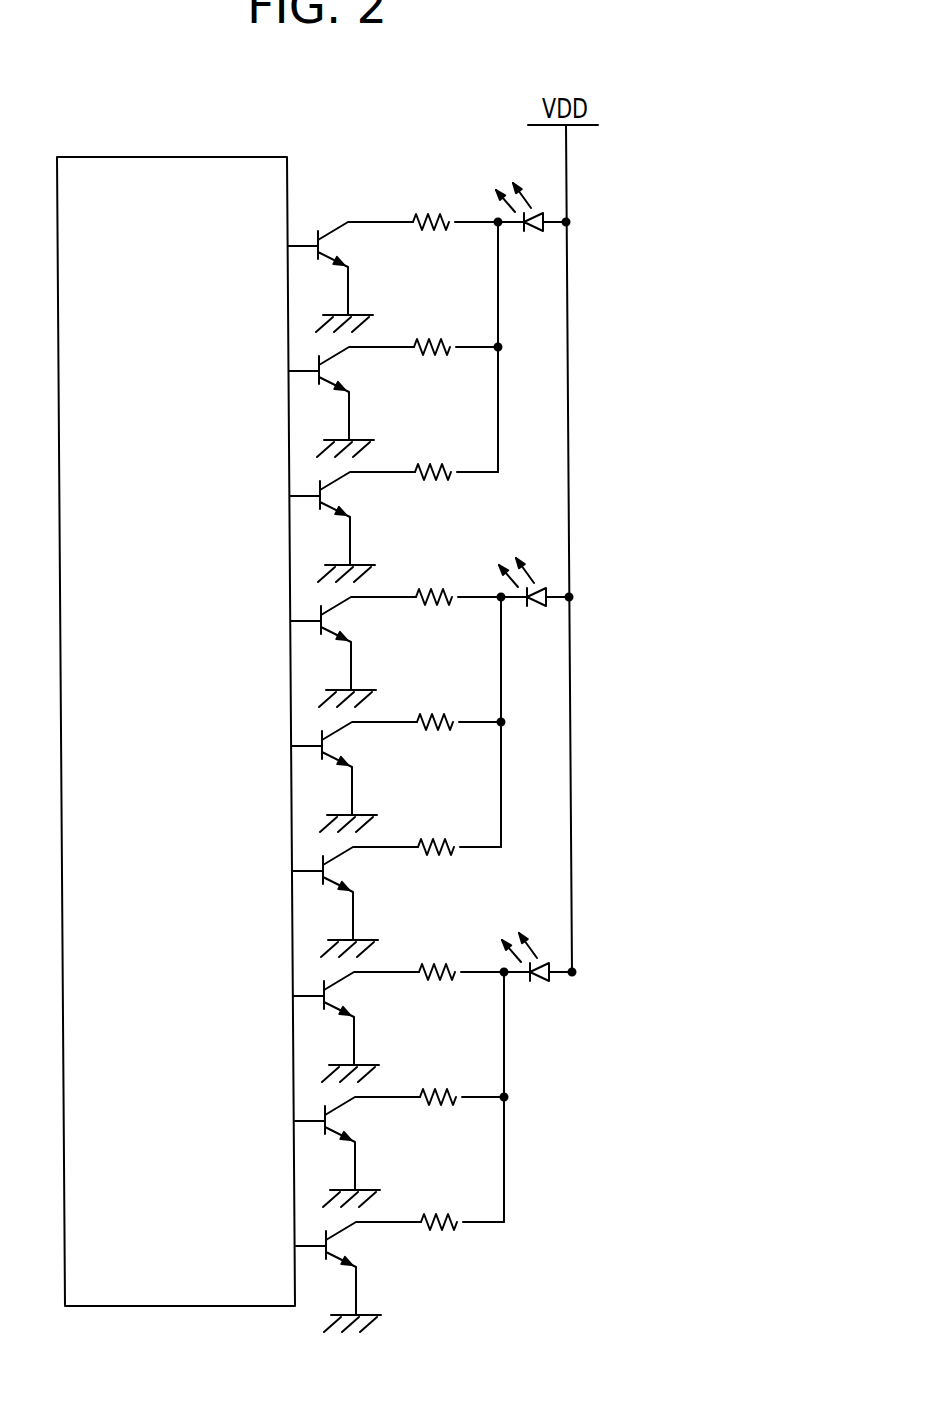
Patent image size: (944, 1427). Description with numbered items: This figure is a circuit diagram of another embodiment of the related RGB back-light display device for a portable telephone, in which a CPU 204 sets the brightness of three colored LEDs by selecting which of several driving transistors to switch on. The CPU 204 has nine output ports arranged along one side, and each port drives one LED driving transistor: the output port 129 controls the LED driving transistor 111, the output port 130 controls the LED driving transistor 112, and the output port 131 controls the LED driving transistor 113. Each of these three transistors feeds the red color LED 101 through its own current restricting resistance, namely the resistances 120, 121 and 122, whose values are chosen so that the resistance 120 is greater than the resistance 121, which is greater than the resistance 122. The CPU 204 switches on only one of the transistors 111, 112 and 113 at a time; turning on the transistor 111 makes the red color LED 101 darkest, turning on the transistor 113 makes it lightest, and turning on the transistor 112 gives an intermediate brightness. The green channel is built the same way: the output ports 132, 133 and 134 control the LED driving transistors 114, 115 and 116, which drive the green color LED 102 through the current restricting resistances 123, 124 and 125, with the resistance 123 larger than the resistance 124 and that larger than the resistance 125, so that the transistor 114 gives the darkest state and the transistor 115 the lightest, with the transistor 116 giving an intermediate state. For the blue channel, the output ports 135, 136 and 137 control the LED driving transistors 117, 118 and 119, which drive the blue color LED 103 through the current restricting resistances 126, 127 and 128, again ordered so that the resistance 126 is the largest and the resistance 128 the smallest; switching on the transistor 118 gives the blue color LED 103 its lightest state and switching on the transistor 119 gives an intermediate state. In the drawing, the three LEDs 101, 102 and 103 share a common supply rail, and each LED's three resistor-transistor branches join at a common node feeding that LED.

The CPU 204 is at (182, 156).
The red color LED 101 is at (531, 229).
The green color LED 102 is at (534, 604).
The blue color LED 103 is at (537, 979).
The LED driving transistor 111 is at (348, 233).
The LED driving transistor 112 is at (349, 358).
The LED driving transistor 113 is at (350, 483).
The LED driving transistor 114 is at (351, 608).
The LED driving transistor 115 is at (352, 733).
The LED driving transistor 116 is at (353, 858).
The LED driving transistor 117 is at (354, 983).
The LED driving transistor 118 is at (355, 1108).
The LED driving transistor 119 is at (356, 1233).
The current restricting resistance 120 is at (446, 229).
The current restricting resistance 121 is at (447, 354).
The current restricting resistance 122 is at (448, 479).
The current restricting resistance 123 is at (449, 604).
The current restricting resistance 124 is at (450, 729).
The current restricting resistance 125 is at (451, 854).
The current restricting resistance 126 is at (452, 979).
The current restricting resistance 127 is at (453, 1104).
The current restricting resistance 128 is at (454, 1229).
The output port 129 is at (302, 244).
The output port 130 is at (305, 369).
The output port 131 is at (306, 494).
The output port 132 is at (307, 619).
The output port 133 is at (308, 744).
The output port 134 is at (309, 869).
The output port 135 is at (310, 994).
The output port 136 is at (311, 1119).
The output port 137 is at (312, 1244).